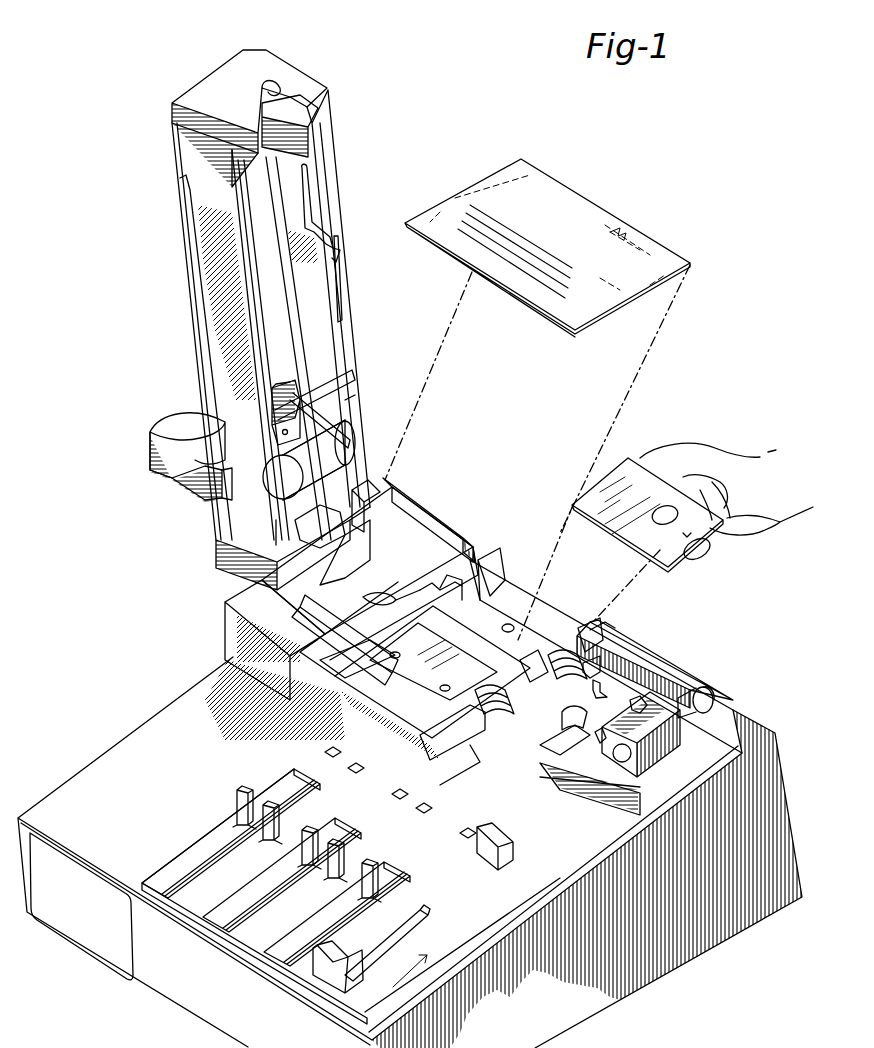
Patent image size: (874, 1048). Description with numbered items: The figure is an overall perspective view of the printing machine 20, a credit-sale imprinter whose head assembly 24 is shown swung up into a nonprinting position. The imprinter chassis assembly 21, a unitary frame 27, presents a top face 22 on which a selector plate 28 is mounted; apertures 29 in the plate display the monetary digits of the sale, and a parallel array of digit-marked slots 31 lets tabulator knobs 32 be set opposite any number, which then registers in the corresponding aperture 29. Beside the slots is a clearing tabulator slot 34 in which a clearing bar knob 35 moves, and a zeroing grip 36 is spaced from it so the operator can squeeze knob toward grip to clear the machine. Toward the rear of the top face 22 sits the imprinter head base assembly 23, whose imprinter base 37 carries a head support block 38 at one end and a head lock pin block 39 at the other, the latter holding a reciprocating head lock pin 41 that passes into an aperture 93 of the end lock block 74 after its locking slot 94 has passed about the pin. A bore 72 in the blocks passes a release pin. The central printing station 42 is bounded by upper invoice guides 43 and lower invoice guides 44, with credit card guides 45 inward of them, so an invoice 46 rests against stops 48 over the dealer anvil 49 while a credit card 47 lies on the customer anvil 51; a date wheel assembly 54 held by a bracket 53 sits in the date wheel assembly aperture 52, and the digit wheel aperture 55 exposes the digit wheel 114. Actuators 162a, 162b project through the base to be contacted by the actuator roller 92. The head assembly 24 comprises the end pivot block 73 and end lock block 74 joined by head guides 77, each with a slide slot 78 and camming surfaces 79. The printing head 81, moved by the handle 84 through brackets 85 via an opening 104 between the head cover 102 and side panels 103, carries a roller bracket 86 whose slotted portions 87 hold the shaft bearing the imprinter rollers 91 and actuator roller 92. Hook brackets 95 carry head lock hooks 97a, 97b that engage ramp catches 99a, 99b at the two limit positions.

The printing machine 20 is at (165, 636).
The imprinter chassis assembly 21 is at (644, 1006).
The top face 22 is at (135, 750).
The imprinter head base assembly 23 is at (690, 662).
The head assembly 24 is at (170, 275).
The unitary frame 27 is at (712, 928).
The selector plate 28 is at (305, 775).
The apertures 29 is at (468, 829).
The slots 31 is at (245, 945).
The tabulator knobs 32 is at (360, 862).
The clearing tabulator slot 34 is at (420, 930).
The clearing bar knob 35 is at (333, 955).
The zeroing grip 36 is at (496, 850).
The imprinter base 37 is at (630, 645).
The head support block 38 is at (418, 505).
The head lock pin block 39 is at (665, 750).
The head lock pin 41 is at (712, 690).
The printing station 42 is at (527, 585).
The upper invoice guides 43 is at (552, 760).
The lower invoice guides 44 is at (470, 752).
The credit card guides 45 is at (578, 636).
The invoice 46 is at (612, 215).
The credit card 47 is at (612, 470).
The stops 48 is at (422, 572).
The dealer anvil 49 is at (370, 690).
The customer anvil 51 is at (508, 626).
The date wheel assembly aperture 52 is at (493, 676).
The bracket 53 is at (525, 695).
The date wheel assembly 54 is at (490, 712).
The digit wheel aperture 55 is at (592, 680).
The bore 72 is at (642, 710).
The end pivot block 73 is at (240, 572).
The end lock block 74 is at (215, 80).
The head guides 77 is at (320, 279).
The slide slot 78 is at (352, 325).
The camming surfaces 79 is at (360, 400).
The printing head 81 is at (148, 412).
The handle 84 is at (182, 478).
The brackets 85 is at (224, 502).
The roller bracket 86 is at (318, 395).
The slotted portions 87 is at (352, 442).
The imprinter rollers 91 is at (283, 476).
The actuator roller 92 is at (280, 468).
The aperture 93 is at (290, 95).
The locking slot 94 is at (318, 112).
The hook brackets 95 is at (274, 434).
The head lock hook 97a is at (270, 392).
The head lock hook 97b is at (276, 527).
The ramp catch 99a is at (603, 710).
The ramp catch 99b is at (370, 484).
The head cover 102 is at (192, 306).
The side panels 103 is at (204, 322).
The opening 104 is at (208, 370).
The digit wheel 114 is at (608, 630).
The actuator 162a is at (598, 738).
The actuator 162b is at (362, 596).